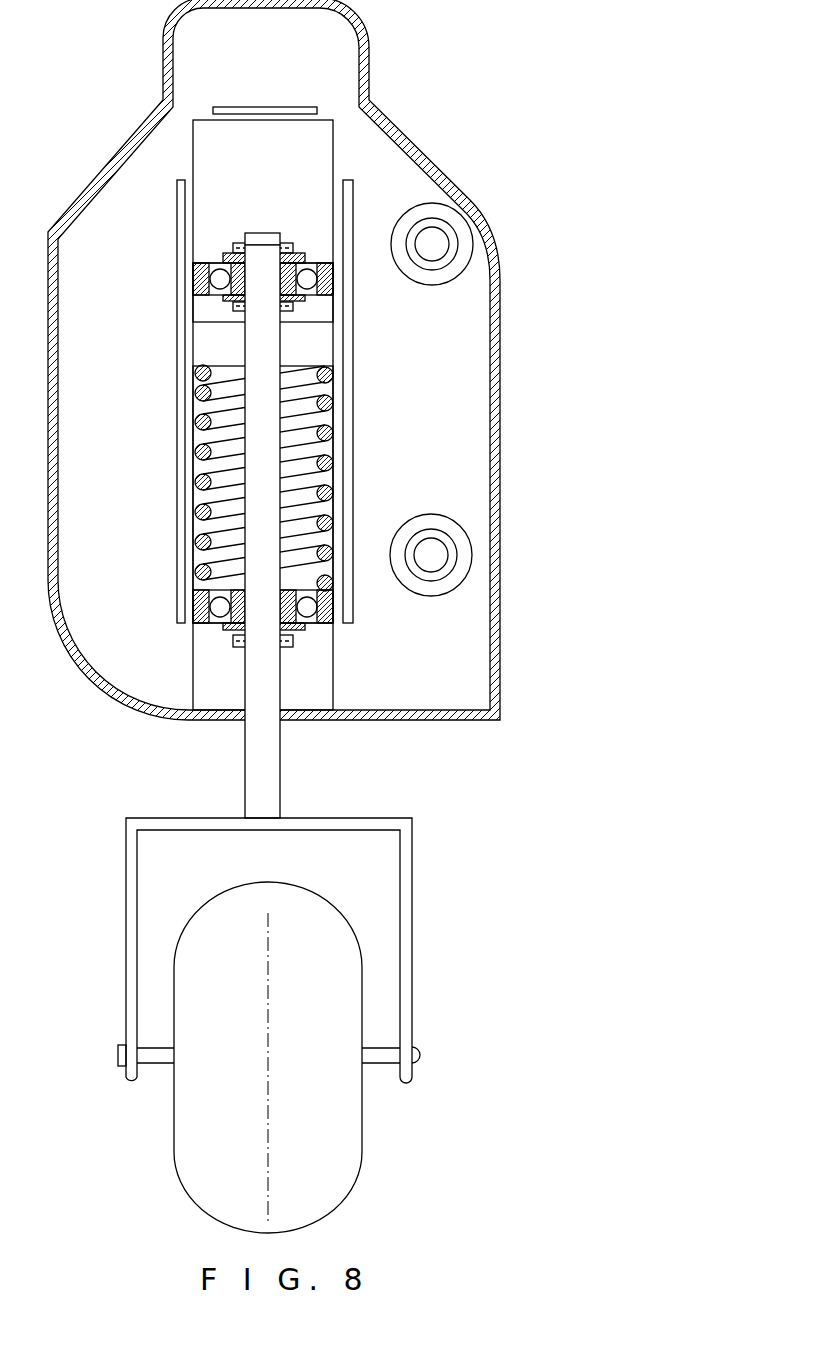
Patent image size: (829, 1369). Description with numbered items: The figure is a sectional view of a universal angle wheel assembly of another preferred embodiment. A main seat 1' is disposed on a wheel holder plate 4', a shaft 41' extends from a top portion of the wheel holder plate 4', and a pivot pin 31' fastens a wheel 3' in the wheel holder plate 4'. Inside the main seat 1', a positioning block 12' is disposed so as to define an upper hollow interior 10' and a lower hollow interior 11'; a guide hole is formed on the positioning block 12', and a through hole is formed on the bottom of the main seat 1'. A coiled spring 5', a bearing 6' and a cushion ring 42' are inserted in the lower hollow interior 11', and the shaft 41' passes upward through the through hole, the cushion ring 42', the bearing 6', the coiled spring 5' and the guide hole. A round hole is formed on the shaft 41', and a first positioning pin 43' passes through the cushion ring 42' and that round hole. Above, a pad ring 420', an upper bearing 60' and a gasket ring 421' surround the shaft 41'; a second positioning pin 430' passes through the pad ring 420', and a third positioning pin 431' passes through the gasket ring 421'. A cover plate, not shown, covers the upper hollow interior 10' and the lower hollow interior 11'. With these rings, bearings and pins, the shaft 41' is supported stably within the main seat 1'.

The main seat 1' is at (290, 360).
The upper hollow interior 10' is at (225, 408).
The positioning block 12' is at (302, 315).
The upper bearing 60' is at (301, 285).
The third positioning pin 431' is at (204, 265).
The gasket ring 421' is at (283, 205).
The pad ring 420' is at (323, 314).
The second positioning pin 430' is at (206, 319).
The lower hollow interior 11' is at (298, 494).
The coiled spring 5' is at (295, 478).
The bearing 6' is at (315, 621).
The cushion ring 42' is at (315, 660).
The first positioning pin 43' is at (218, 661).
The shaft 41' is at (302, 531).
The wheel holder plate 4' is at (295, 950).
The wheel 3' is at (292, 1057).
The pivot pin 31' is at (269, 1086).